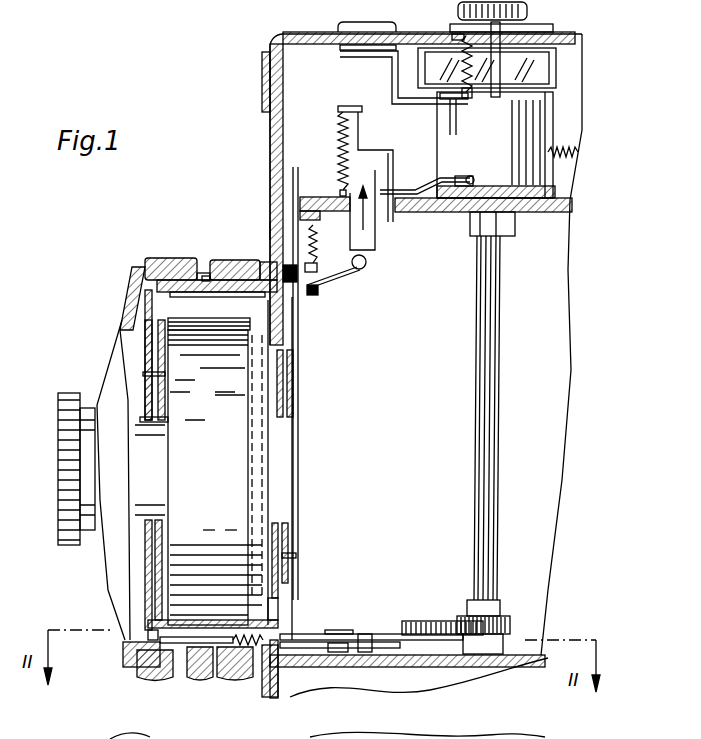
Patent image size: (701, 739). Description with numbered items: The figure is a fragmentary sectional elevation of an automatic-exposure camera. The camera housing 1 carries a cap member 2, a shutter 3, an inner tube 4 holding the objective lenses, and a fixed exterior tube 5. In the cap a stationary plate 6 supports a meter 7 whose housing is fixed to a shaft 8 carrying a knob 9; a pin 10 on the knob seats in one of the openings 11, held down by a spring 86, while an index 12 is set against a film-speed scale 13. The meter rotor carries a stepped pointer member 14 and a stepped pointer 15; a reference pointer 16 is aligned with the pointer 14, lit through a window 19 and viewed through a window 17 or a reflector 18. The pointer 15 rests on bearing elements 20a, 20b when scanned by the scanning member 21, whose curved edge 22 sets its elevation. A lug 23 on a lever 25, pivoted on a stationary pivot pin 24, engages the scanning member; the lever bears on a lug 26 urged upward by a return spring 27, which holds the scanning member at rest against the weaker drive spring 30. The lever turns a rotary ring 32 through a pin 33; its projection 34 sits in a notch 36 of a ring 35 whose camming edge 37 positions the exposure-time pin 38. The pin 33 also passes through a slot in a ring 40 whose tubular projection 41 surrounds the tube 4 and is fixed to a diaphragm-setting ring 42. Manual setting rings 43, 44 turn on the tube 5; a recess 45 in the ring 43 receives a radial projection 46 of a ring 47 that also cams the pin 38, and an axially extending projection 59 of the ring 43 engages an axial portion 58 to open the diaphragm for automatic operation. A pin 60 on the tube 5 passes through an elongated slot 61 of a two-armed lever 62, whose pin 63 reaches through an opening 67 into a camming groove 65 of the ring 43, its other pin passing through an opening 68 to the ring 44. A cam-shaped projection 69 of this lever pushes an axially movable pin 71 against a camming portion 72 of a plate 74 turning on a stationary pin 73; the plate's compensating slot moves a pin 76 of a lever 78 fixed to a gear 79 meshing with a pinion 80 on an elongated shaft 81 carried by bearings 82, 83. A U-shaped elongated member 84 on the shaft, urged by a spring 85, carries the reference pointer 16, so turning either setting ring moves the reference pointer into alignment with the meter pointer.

The camera housing 1 is at (270, 222).
The cap member 2 is at (299, 38).
The shutter 3 is at (193, 327).
The inner tube 4 is at (150, 510).
The exterior tube 5 is at (194, 272).
The stationary plate 6 is at (468, 212).
The meter 7 is at (530, 125).
The shaft 8 is at (520, 93).
The knob 9 is at (522, 12).
The pin 10 is at (455, 38).
The openings 11 is at (440, 45).
The index 12 is at (468, 34).
The scale 13 is at (393, 43).
The stepped pointer member 14 is at (462, 92).
The stepped pointer 15 is at (425, 184).
The pointer 16 is at (340, 54).
The window 17 is at (357, 38).
The reflector 18 is at (548, 72).
The window 19 is at (265, 105).
The stationary bearing element 20a is at (380, 215).
The stationary bearing element 20b is at (415, 212).
The scanning member 21 is at (368, 155).
The edge 22 is at (395, 196).
The lug 23 is at (362, 268).
The stationary pivot pin 24 is at (268, 257).
The lever 25 is at (305, 325).
The lug 26 is at (315, 292).
The spring 27 is at (319, 242).
The drive spring 30 is at (340, 135).
The rotary ring 32 is at (280, 382).
The pin 33 is at (296, 556).
The elongated projection 34 is at (278, 614).
The ring 35 is at (147, 608).
The notch 36 is at (153, 636).
The camming edge 37 is at (202, 392).
The pin 38 is at (145, 375).
The ring 40 is at (290, 530).
The tubular projection 41 is at (283, 524).
The diaphragm-setting ring 42 is at (270, 462).
The setting ring 43 is at (170, 266).
The setting ring 44 is at (223, 272).
The recess 45 is at (140, 275).
The radial projection 46 is at (145, 320).
The ring 47 is at (150, 408).
The axial portion 58 is at (240, 295).
The axially extending projection 59 is at (205, 275).
The pin 60 is at (210, 678).
The elongated slot 61 is at (187, 597).
The two-armed lever 62 is at (177, 597).
The pin 63 is at (185, 677).
The camming groove 65 is at (166, 672).
The opening 67 is at (133, 672).
The opening 68 is at (248, 682).
The cam-shaped projection 69 is at (208, 597).
The axially movable pin 71 is at (297, 645).
The camming portion 72 is at (322, 648).
The stationary pin 73 is at (334, 648).
The plate 74 is at (377, 665).
The pin 76 is at (363, 632).
The lever 78 is at (395, 635).
The gear 79 is at (443, 628).
The pinion 80 is at (503, 622).
The elongated shaft 81 is at (495, 290).
The bearing 82 is at (503, 647).
The bearing 83 is at (510, 232).
The elongated member 84 is at (548, 192).
The spring 85 is at (565, 158).
The spring 86 is at (470, 95).